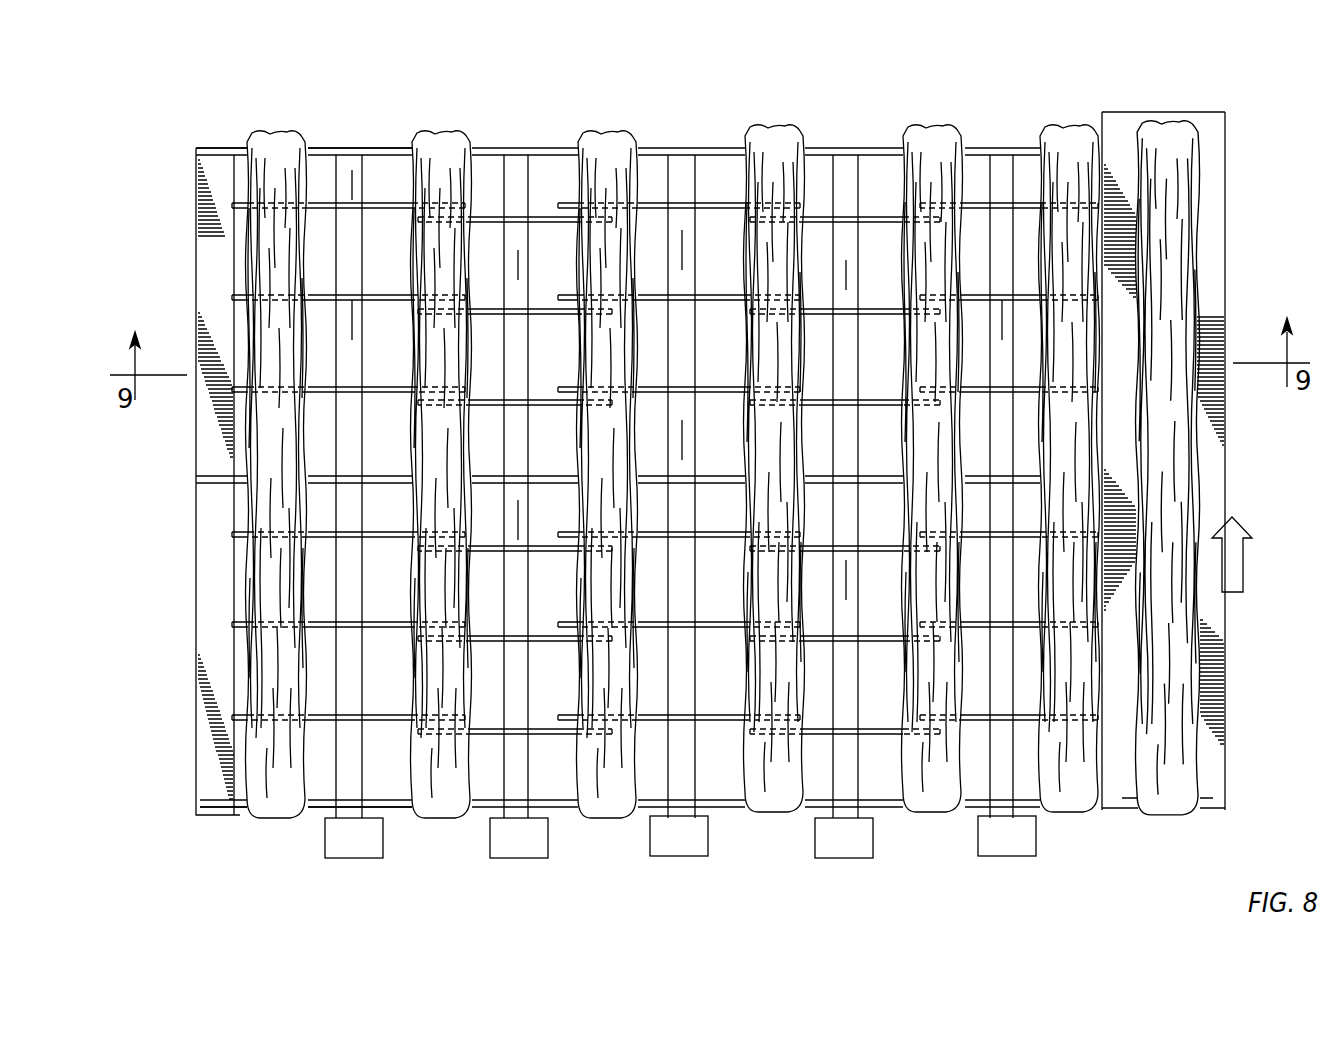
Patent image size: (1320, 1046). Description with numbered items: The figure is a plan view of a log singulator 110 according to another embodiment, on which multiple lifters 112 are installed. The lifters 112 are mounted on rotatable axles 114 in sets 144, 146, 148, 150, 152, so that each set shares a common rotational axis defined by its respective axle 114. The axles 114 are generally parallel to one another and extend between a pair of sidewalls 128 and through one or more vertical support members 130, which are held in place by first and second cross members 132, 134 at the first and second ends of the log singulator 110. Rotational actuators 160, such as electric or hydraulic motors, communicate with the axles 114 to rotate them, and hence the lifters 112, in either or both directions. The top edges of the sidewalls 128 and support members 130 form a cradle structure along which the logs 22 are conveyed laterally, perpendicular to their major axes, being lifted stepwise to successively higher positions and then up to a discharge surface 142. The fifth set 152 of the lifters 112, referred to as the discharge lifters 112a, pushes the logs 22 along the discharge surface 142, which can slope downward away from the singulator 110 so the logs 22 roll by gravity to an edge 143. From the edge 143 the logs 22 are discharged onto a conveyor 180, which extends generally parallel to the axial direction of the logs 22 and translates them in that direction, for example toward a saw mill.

The log singulator 110 is at (180, 124).
The log 22 is at (295, 146).
The lifter 112 is at (613, 495).
The discharge lifter 112a is at (896, 140).
The rotatable axle 114 is at (366, 770).
The sidewall 128 is at (495, 148).
The vertical support member 130 is at (202, 488).
The first cross member 132 is at (200, 736).
The second cross member 134 is at (1105, 755).
The discharge surface 142 is at (1004, 150).
The edge 143 is at (1105, 782).
The first set of lifters 144 is at (332, 722).
The second set of lifters 146 is at (490, 738).
The third set of lifters 148 is at (650, 720).
The fourth set of lifters 150 is at (810, 735).
The fifth set of lifters 152 is at (1030, 735).
The rotational actuator 160 is at (353, 858).
The conveyor 180 is at (1226, 258).